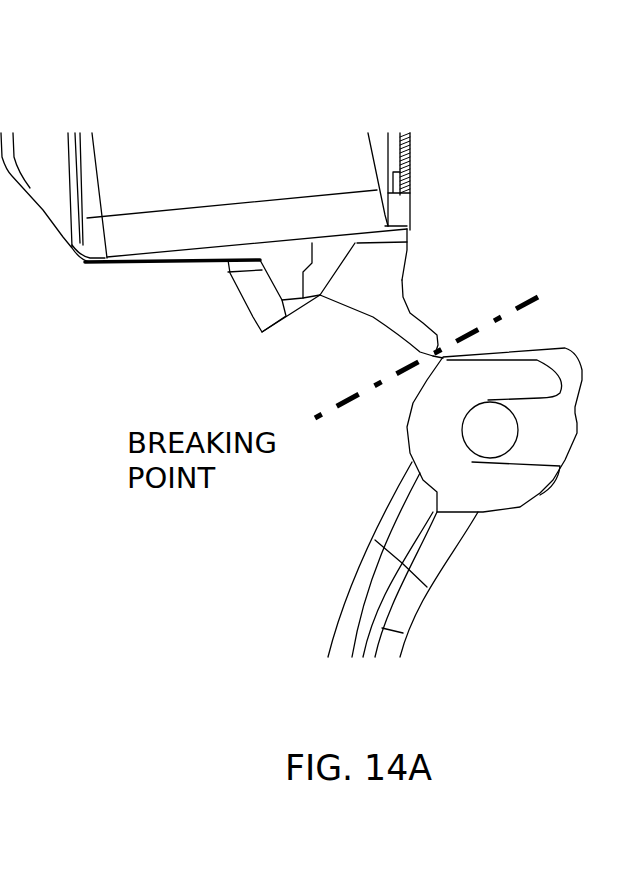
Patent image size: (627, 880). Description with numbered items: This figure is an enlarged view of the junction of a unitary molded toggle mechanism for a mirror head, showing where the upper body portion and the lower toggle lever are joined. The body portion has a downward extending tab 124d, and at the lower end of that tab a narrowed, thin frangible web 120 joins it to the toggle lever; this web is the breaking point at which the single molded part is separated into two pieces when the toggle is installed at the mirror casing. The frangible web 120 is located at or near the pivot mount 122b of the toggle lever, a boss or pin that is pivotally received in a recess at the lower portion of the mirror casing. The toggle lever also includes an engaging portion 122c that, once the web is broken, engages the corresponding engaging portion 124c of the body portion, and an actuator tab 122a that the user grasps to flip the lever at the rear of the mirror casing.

The frangible web 120 is at (433, 354).
The actuator tab 122a is at (362, 613).
The pivot mount 122b is at (493, 425).
The engaging portion 122c is at (412, 462).
The engaging portion 124c is at (264, 315).
The downward extending tab 124d is at (412, 312).